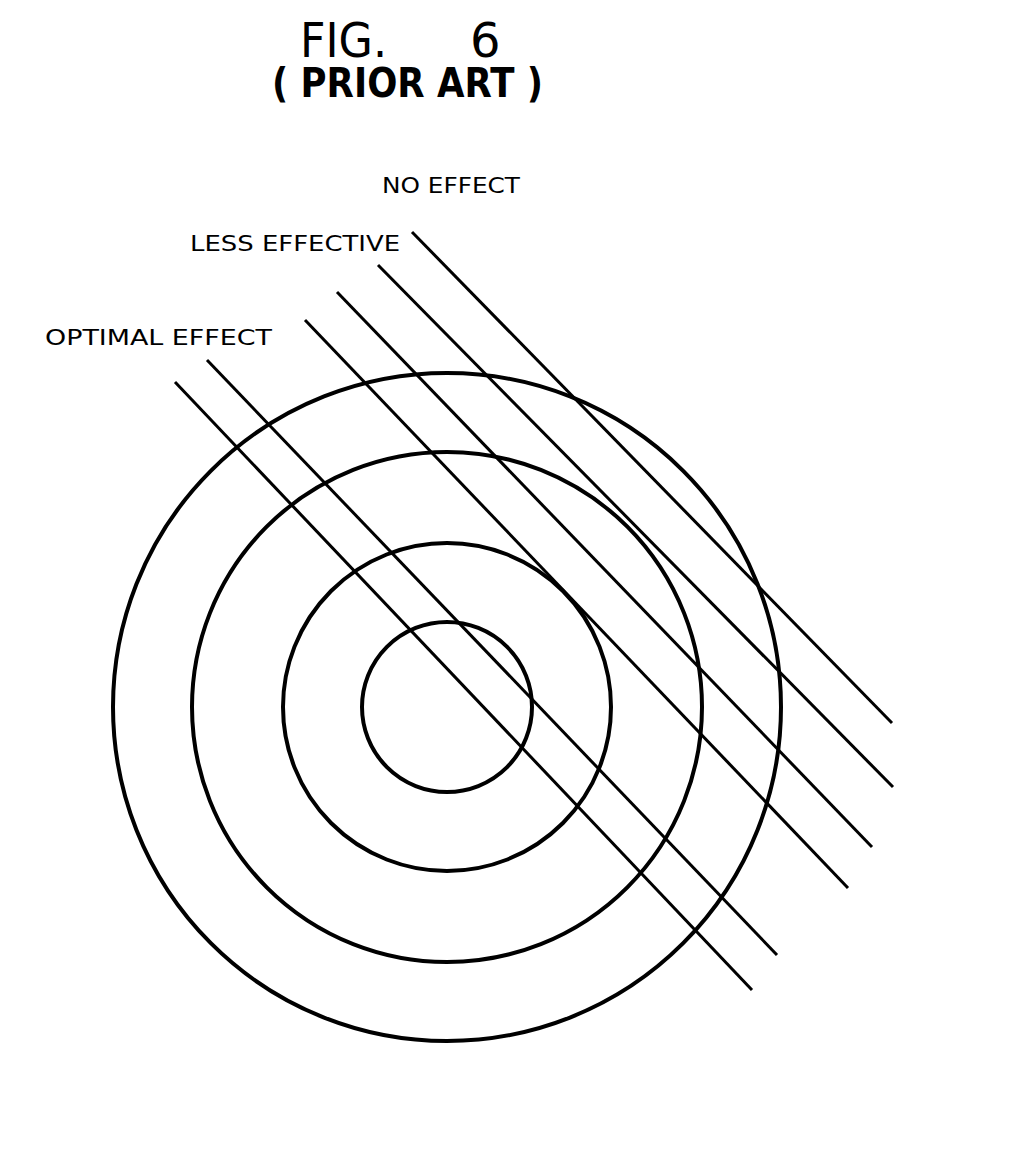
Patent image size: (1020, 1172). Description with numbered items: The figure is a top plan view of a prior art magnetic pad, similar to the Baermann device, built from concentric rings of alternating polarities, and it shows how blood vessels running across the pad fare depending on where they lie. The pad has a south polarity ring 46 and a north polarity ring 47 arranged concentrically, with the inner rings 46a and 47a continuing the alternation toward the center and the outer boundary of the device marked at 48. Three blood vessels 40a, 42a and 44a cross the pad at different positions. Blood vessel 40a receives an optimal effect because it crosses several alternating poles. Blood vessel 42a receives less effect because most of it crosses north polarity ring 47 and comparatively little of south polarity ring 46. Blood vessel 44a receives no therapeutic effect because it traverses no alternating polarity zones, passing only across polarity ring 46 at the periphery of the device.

The blood vessel 40a is at (210, 402).
The blood vessel 42a is at (323, 330).
The blood vessel 44a is at (420, 272).
The south polarity ring 46 is at (220, 483).
The north polarity ring 47 is at (273, 558).
The inner south pole magnet ring 46a is at (330, 635).
The central north pole magnet 47a is at (387, 695).
The outer boundary of magnet assembly 48 is at (673, 952).